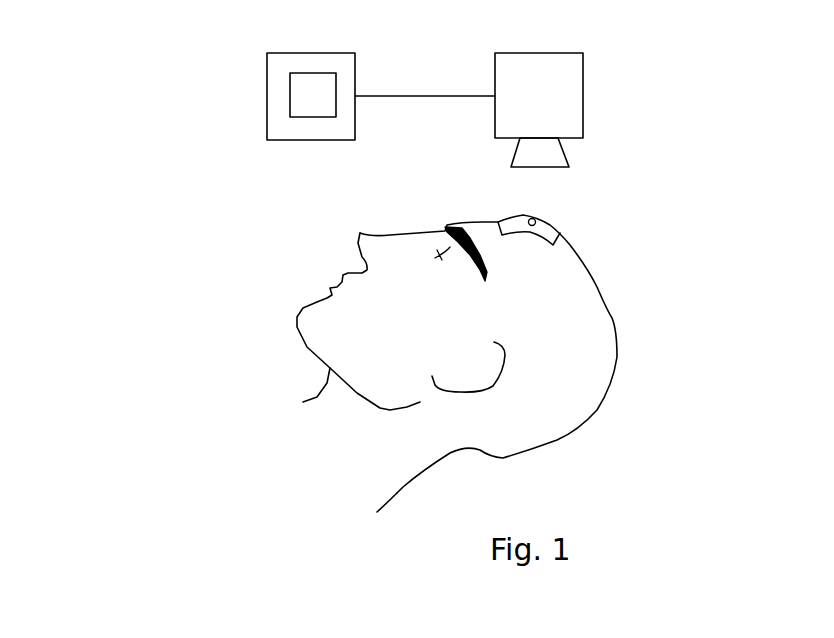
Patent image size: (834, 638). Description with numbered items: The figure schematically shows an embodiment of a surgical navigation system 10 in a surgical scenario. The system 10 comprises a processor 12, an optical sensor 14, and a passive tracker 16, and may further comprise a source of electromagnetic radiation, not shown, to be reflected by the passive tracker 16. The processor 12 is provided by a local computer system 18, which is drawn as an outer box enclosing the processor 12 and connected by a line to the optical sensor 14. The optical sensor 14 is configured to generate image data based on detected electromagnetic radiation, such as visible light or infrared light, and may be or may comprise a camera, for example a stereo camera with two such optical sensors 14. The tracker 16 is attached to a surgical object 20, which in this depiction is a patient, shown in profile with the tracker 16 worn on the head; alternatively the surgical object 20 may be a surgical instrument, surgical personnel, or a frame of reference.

The surgical navigation system 10 is at (740, 123).
The processor 12 is at (295, 82).
The optical sensor 14 is at (580, 78).
The passive tracker 16 is at (553, 237).
The local computer system 18 is at (283, 116).
The surgical object 20 is at (587, 300).